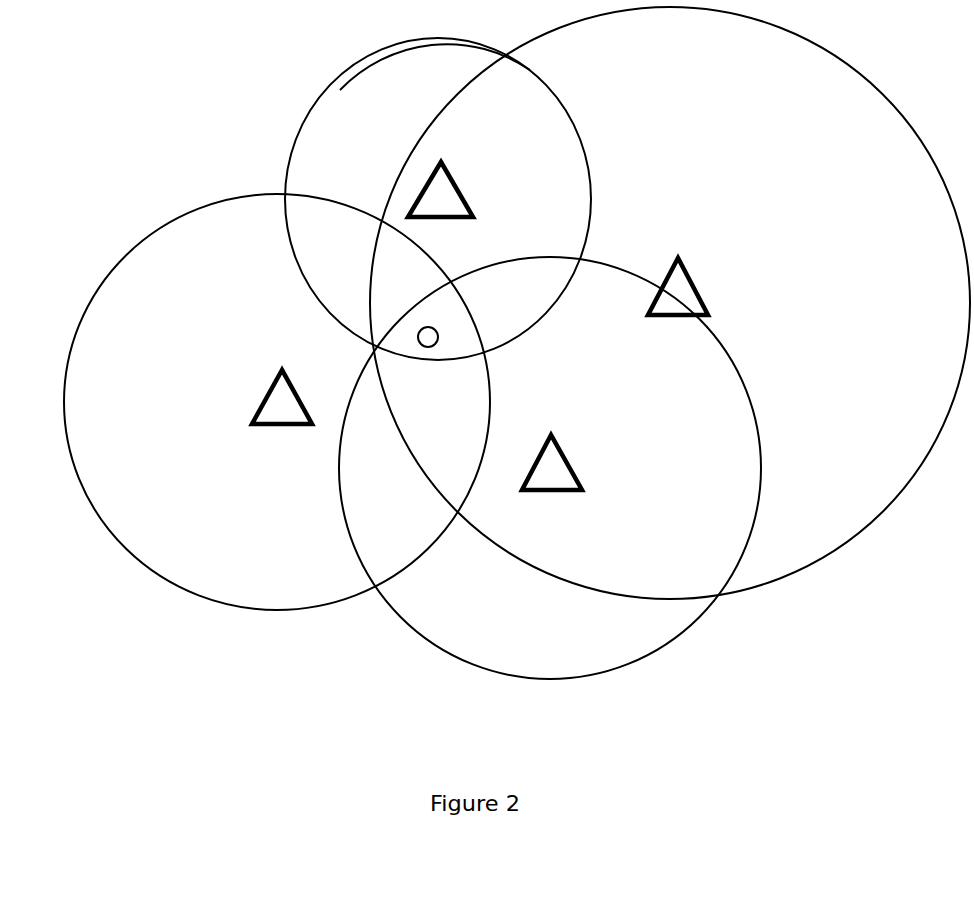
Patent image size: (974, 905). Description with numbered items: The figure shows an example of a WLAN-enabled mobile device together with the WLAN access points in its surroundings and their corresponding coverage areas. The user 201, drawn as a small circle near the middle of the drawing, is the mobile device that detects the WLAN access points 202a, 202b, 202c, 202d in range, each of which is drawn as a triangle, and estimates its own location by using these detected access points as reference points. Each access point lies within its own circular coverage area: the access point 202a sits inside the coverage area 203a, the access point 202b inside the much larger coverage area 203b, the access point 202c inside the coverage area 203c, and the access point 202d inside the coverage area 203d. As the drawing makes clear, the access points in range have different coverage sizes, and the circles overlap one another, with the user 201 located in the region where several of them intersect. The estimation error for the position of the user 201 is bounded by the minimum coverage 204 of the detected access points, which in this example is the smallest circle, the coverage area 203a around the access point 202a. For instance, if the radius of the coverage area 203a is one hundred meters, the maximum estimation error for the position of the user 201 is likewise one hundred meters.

The user 201 is at (454, 348).
The access point 202a is at (471, 189).
The access point 202b is at (705, 286).
The access point 202c is at (580, 477).
The access point 202d is at (257, 397).
The coverage area 203a is at (438, 199).
The coverage area 203b is at (670, 303).
The coverage area 203c is at (550, 475).
The coverage area 203d is at (276, 402).
The minimum coverage 204 is at (435, 57).